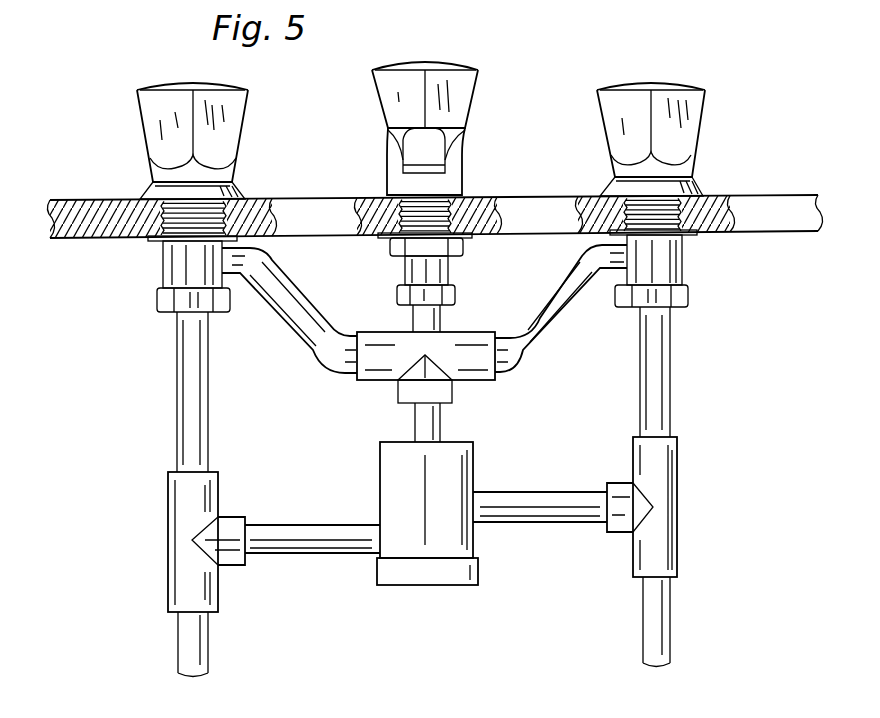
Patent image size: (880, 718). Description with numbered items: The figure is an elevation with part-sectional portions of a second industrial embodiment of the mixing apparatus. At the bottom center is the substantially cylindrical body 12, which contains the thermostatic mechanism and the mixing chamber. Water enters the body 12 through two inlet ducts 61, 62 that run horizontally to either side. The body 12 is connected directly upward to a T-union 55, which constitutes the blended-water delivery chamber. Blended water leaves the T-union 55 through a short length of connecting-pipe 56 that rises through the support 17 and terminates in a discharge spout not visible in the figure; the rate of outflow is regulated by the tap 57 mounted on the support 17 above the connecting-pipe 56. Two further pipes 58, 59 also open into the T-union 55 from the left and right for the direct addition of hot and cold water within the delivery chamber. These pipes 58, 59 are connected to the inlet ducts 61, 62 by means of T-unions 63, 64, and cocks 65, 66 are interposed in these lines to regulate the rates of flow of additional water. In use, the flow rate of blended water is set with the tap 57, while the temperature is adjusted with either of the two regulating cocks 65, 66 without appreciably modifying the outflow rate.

The body 12 is at (478, 465).
The support 17 is at (522, 212).
The T-union 55 is at (467, 342).
The connecting-pipe 56 is at (435, 270).
The tap 57 is at (465, 92).
The pipe 58 is at (297, 318).
The pipe 59 is at (557, 327).
The inlet duct 61 is at (313, 553).
The inlet duct 62 is at (543, 513).
The T-union 63 is at (185, 578).
The T-union 64 is at (680, 537).
The regulating cock 65 is at (232, 117).
The regulating cock 66 is at (667, 83).